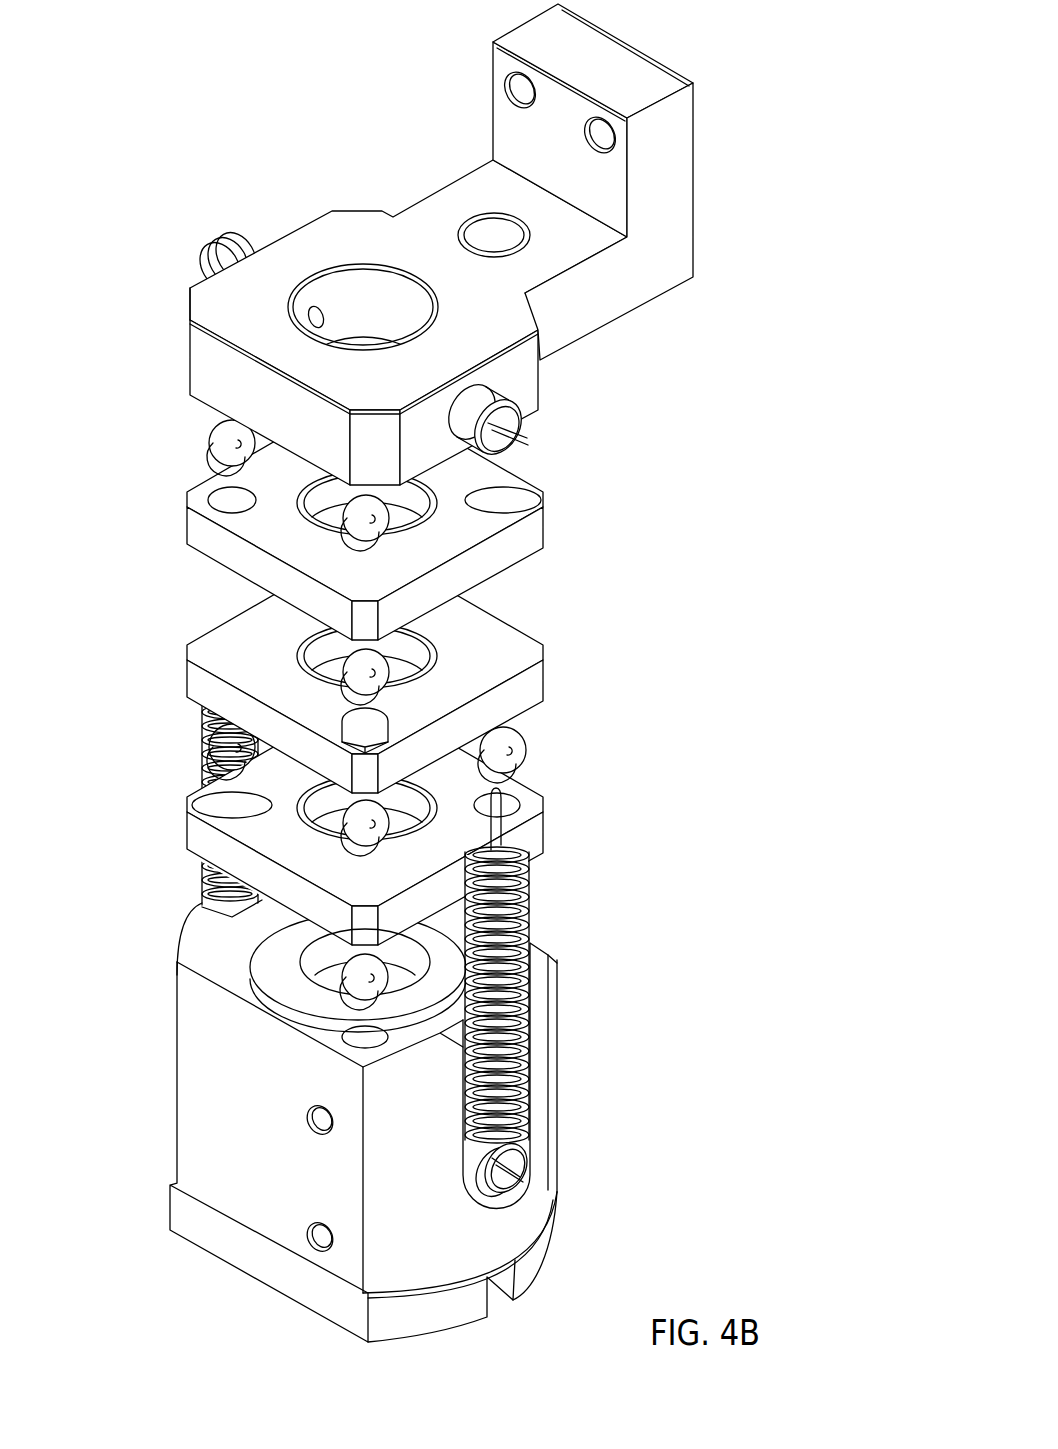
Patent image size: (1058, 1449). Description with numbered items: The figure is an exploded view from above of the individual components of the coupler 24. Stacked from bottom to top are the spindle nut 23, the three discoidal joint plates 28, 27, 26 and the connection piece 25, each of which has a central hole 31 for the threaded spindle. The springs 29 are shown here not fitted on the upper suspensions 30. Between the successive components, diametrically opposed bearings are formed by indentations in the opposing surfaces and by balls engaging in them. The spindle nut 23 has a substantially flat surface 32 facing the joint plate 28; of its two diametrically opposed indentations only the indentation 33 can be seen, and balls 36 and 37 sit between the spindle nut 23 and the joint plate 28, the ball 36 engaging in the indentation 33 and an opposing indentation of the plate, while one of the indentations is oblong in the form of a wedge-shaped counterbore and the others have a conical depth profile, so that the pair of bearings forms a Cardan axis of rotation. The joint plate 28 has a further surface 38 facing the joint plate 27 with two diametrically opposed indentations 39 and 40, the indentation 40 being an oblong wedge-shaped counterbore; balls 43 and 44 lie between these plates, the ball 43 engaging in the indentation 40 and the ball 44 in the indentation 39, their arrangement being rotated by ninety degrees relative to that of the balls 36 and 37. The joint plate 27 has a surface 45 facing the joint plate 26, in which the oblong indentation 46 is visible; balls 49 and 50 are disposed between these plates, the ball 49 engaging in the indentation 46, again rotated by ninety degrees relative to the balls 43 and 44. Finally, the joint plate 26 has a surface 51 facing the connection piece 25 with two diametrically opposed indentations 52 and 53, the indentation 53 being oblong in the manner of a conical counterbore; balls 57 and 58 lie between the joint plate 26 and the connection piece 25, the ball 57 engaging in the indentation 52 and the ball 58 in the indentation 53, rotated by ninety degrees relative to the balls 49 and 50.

The spindle nut 23 is at (187, 1100).
The coupler 24 is at (266, 124).
The connection piece 25 is at (362, 232).
The joint plate 26 is at (537, 533).
The joint plate 27 is at (533, 680).
The joint plate 28 is at (537, 835).
The spring 29 is at (200, 880).
The upper suspension 30 is at (226, 248).
The central hole 31 is at (428, 310).
The flat surface 32 is at (192, 940).
The indentation 33 is at (368, 1040).
The ball 36 is at (343, 990).
The ball 37 is at (347, 828).
The surface 38 is at (247, 833).
The indentation 39 is at (517, 805).
The indentation 40 is at (200, 803).
The ball 43 is at (217, 744).
The ball 44 is at (505, 750).
The surface 45 is at (198, 652).
The indentation 46 is at (353, 723).
The ball 49 is at (378, 677).
The ball 50 is at (347, 521).
The surface 51 is at (257, 534).
The indentation 52 is at (222, 496).
The indentation 53 is at (522, 503).
The ball 57 is at (222, 440).
The ball 58 is at (513, 457).